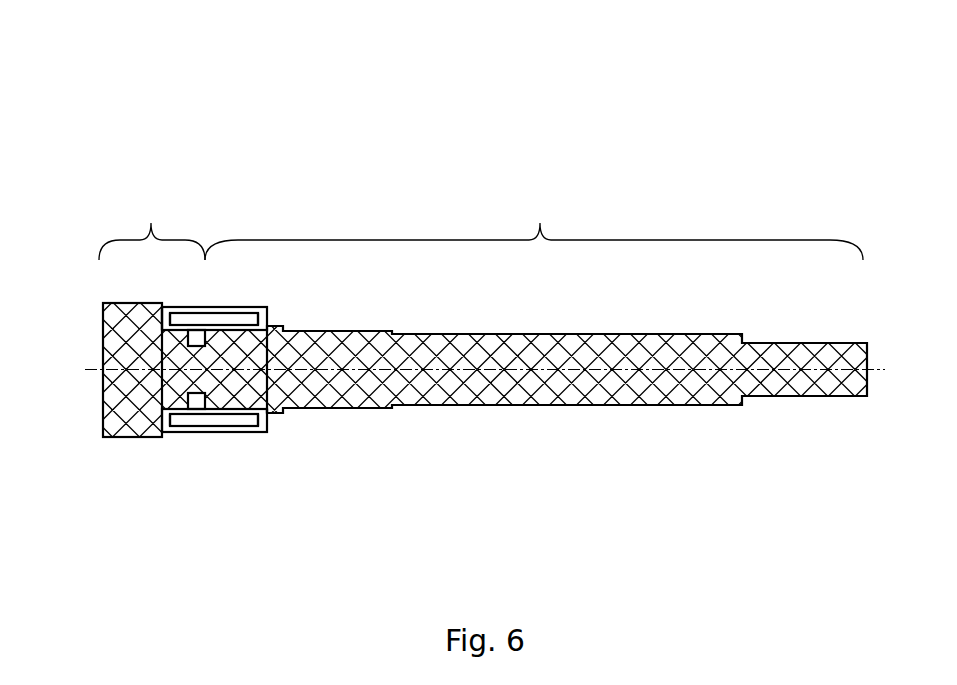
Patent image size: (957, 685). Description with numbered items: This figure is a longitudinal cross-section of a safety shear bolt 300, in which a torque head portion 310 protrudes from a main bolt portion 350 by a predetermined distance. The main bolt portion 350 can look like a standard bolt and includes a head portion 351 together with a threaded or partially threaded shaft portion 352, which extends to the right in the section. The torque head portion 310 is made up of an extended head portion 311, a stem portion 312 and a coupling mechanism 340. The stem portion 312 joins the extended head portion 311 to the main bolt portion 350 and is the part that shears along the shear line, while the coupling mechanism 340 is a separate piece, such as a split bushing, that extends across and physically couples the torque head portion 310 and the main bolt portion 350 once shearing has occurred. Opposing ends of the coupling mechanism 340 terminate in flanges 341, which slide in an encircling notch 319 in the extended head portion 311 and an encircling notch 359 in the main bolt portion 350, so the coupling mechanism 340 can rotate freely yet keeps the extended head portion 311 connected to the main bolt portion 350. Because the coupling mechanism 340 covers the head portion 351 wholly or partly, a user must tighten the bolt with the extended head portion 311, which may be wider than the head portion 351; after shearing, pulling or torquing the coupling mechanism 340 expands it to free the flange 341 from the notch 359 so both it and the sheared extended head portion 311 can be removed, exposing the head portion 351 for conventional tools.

The safety shear bolt 300 is at (133, 66).
The torque head portion 310 is at (157, 358).
The extended head portion 311 is at (123, 440).
The stem portion 312 is at (202, 399).
The notch 319 is at (164, 334).
The coupling mechanism 340 is at (225, 437).
The flanges 341 is at (174, 318).
The main bolt portion 350 is at (514, 382).
The head portion 351 is at (249, 318).
The shaft portion 352 is at (462, 333).
The notch 359 is at (266, 334).